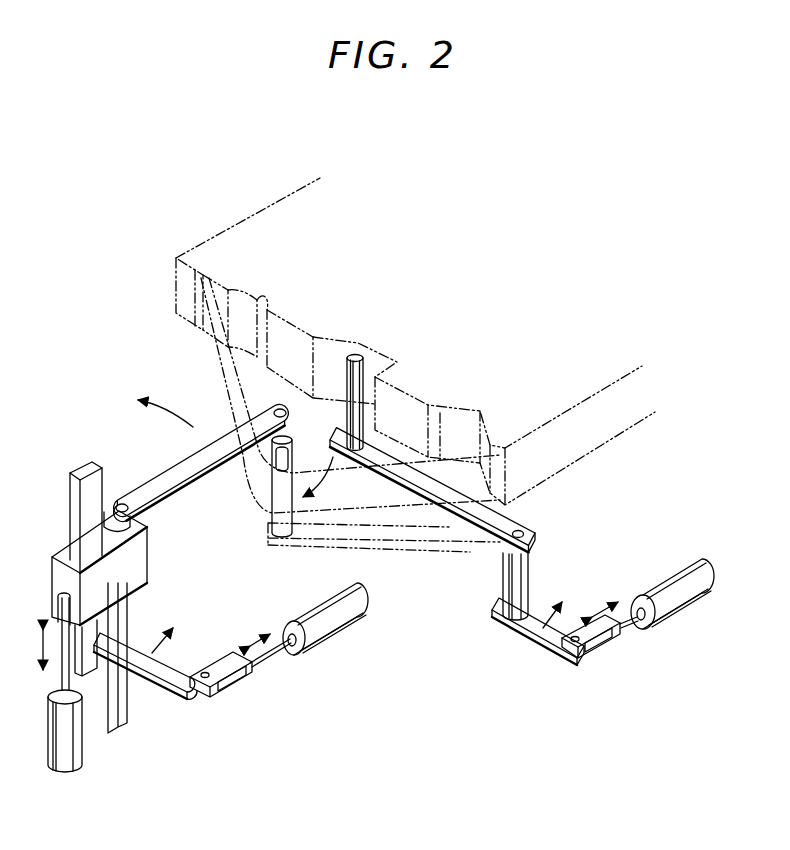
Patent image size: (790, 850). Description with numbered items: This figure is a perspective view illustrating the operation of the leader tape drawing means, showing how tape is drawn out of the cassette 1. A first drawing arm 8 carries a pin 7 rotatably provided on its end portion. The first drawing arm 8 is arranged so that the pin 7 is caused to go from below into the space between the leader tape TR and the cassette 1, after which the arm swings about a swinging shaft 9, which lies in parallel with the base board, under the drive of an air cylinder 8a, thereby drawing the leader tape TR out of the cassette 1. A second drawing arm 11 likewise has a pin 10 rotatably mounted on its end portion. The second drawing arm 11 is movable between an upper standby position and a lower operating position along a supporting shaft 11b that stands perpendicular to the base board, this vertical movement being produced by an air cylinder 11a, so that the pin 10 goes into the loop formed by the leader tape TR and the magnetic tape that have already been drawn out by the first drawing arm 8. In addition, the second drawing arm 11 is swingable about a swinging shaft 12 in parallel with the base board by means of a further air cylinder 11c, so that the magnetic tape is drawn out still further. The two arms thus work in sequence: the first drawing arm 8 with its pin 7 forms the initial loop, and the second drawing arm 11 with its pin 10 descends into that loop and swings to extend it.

The cassette 1 is at (246, 215).
The leader tape TR is at (212, 368).
The pin 7 is at (352, 353).
The first drawing arm 8 is at (500, 528).
The swinging shaft 9 is at (525, 534).
The pin 10 is at (273, 453).
The second drawing arm 11 is at (177, 483).
The swinging shaft 12 is at (122, 502).
The air cylinder 11a is at (78, 760).
The supporting shaft 11b is at (90, 468).
The air cylinder 11c is at (353, 622).
The air cylinder 8a is at (683, 602).